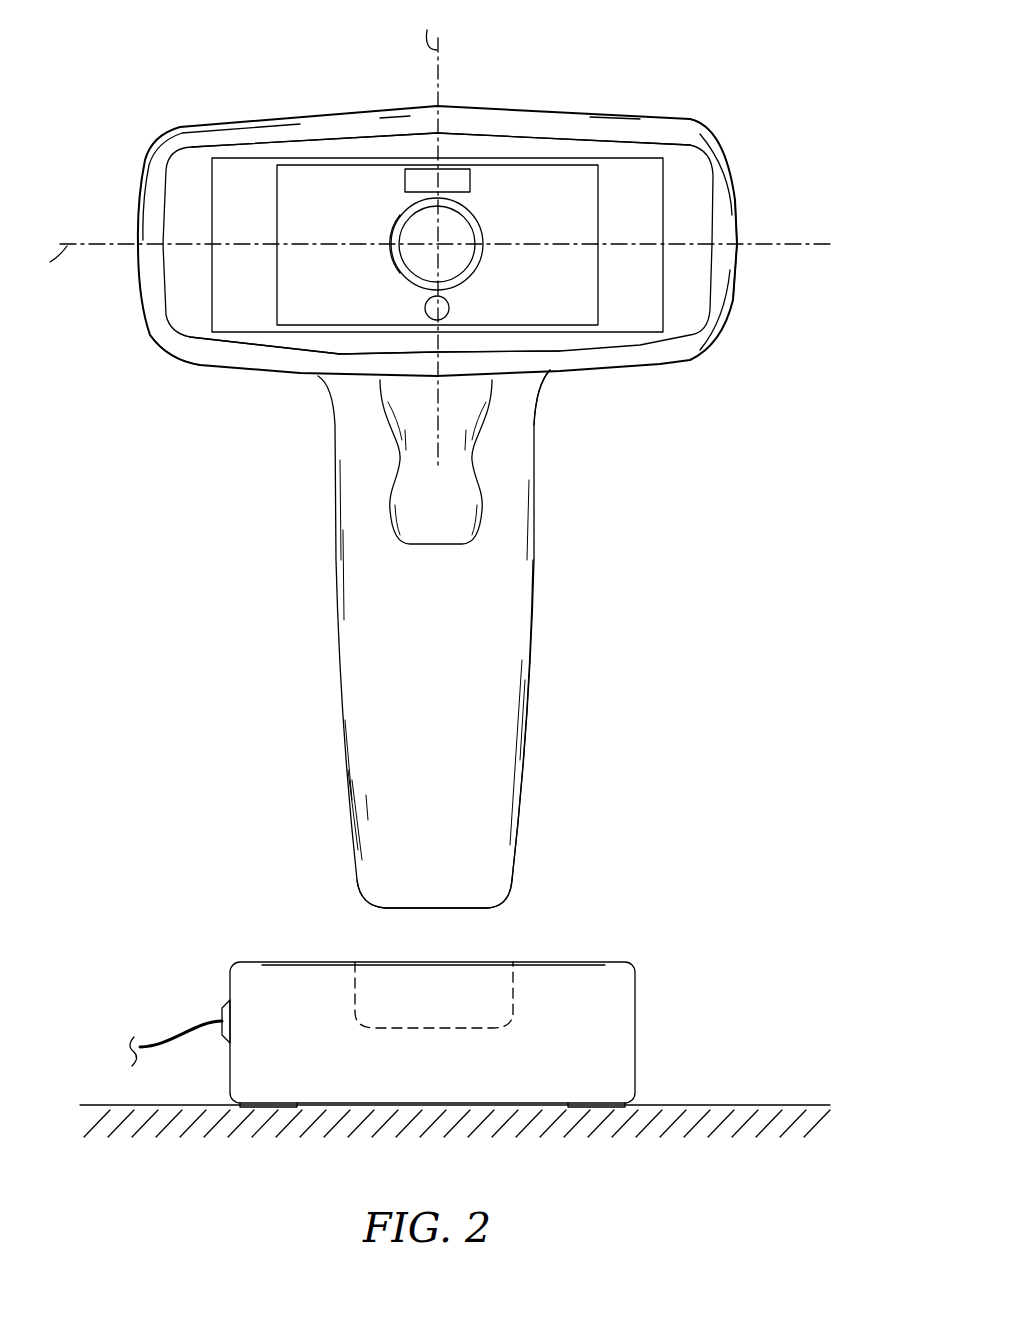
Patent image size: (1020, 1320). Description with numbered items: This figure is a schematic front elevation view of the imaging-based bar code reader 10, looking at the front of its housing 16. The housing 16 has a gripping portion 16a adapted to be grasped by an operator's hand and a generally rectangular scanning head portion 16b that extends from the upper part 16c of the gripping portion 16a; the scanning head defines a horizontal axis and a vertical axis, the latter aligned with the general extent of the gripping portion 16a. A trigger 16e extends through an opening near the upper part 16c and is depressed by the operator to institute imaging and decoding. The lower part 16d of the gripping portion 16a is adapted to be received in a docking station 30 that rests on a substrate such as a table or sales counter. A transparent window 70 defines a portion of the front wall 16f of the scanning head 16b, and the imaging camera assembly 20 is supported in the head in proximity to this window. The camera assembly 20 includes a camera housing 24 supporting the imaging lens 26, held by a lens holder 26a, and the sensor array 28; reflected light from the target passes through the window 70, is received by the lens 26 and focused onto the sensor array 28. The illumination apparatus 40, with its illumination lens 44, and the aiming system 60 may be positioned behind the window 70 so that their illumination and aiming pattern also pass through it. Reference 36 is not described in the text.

The imaging-based bar code reader 10 is at (152, 44).
The housing 16 is at (471, 491).
The gripping portion 16a is at (536, 644).
The scanning head portion 16b is at (733, 318).
The upper part of the gripping portion 16c is at (546, 384).
The lower part of the gripping portion 16d is at (512, 882).
The trigger 16e is at (407, 530).
The front wall of the scanning head 16f is at (190, 312).
The imaging camera assembly 20 is at (577, 157).
The camera housing 24 is at (329, 158).
The imaging lens 26 is at (411, 226).
The lens holder 26a is at (397, 272).
The sensor array 28 is at (484, 262).
The docking station 30 is at (635, 1003).
The lower rim 36 is at (442, 340).
The illumination apparatus 40 is at (477, 180).
The illumination lens 44 is at (453, 172).
The aiming system 60 is at (451, 309).
The transparent window 70 is at (247, 312).